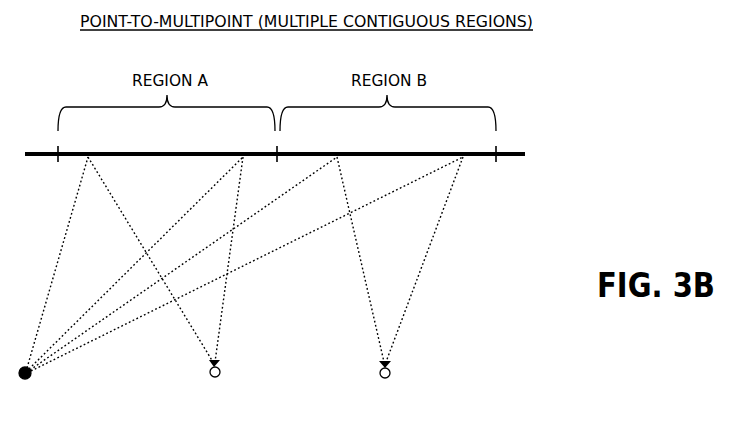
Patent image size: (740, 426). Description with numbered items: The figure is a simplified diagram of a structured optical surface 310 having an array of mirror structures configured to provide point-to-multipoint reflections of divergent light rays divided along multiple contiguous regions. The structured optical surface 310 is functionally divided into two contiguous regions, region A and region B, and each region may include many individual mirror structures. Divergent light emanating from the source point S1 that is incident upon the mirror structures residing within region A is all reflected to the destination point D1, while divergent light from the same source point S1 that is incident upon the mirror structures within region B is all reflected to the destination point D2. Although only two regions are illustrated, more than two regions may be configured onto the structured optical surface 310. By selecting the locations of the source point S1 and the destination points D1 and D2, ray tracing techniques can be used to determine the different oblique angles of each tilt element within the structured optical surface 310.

The structured optical surface 310 is at (525, 154).
The source point S1 is at (25, 385).
The destination point D1 is at (215, 381).
The destination point D2 is at (385, 382).